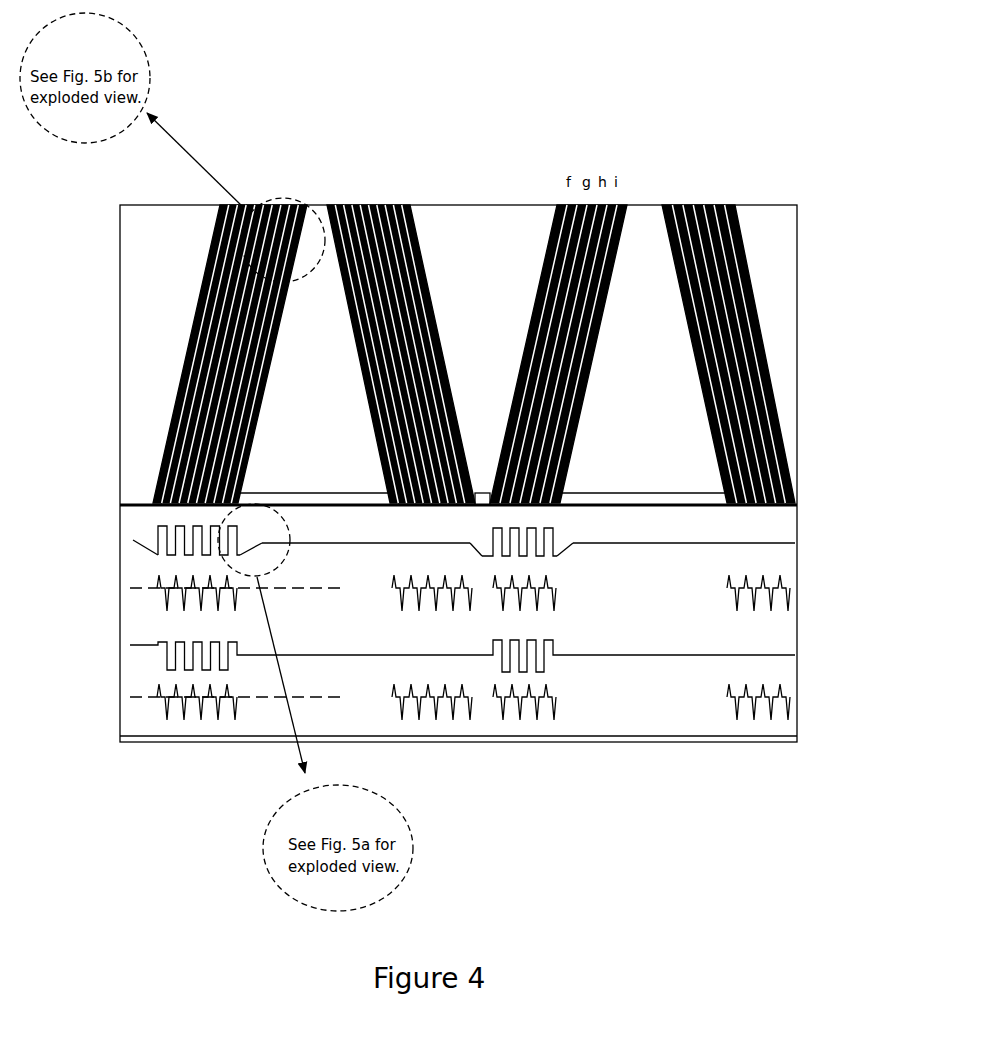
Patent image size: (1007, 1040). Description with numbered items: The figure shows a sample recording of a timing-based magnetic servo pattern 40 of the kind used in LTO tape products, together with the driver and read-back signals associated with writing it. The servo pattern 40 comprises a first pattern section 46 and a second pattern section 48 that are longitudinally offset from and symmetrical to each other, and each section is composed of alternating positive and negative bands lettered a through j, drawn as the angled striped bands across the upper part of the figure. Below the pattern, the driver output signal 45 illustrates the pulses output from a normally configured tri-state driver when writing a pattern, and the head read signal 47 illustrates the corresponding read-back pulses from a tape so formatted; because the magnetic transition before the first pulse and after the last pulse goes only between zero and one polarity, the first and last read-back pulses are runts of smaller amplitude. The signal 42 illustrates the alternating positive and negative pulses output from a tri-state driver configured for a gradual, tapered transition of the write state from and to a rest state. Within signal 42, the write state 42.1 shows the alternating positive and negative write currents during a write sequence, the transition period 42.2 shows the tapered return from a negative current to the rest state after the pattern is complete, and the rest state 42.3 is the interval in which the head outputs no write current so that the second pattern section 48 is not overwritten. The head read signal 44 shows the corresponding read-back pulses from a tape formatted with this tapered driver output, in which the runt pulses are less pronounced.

The magnetic servo pattern 40 is at (266, 288).
The driver output signal with tapered transition 42 is at (445, 655).
The write state 42.1 is at (157, 533).
The transition period 42.2 is at (480, 553).
The rest state 42.3 is at (351, 548).
The head read signal (tapered driver) 44 is at (128, 587).
The driver output signal 45 is at (118, 651).
The first pattern section 46 is at (185, 315).
The head read signal 47 is at (128, 704).
The second pattern section 48 is at (438, 267).